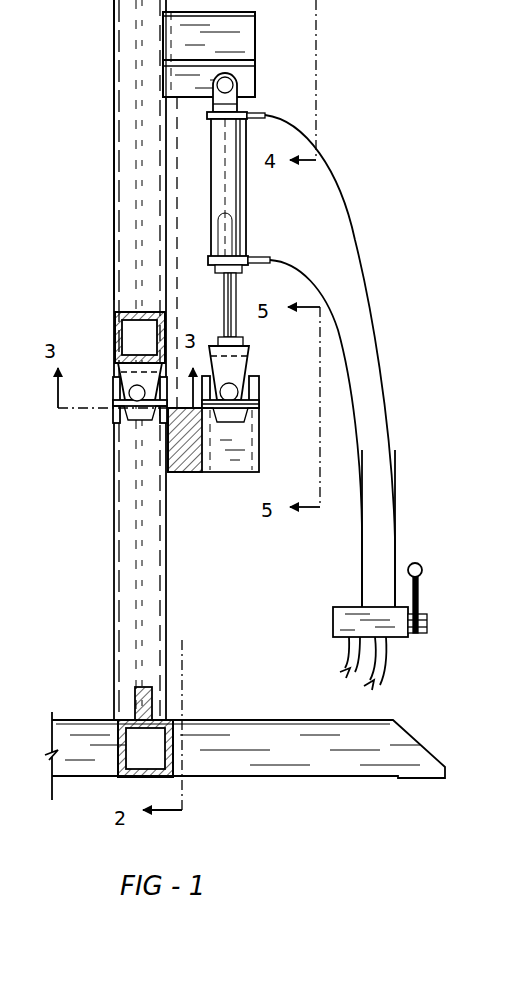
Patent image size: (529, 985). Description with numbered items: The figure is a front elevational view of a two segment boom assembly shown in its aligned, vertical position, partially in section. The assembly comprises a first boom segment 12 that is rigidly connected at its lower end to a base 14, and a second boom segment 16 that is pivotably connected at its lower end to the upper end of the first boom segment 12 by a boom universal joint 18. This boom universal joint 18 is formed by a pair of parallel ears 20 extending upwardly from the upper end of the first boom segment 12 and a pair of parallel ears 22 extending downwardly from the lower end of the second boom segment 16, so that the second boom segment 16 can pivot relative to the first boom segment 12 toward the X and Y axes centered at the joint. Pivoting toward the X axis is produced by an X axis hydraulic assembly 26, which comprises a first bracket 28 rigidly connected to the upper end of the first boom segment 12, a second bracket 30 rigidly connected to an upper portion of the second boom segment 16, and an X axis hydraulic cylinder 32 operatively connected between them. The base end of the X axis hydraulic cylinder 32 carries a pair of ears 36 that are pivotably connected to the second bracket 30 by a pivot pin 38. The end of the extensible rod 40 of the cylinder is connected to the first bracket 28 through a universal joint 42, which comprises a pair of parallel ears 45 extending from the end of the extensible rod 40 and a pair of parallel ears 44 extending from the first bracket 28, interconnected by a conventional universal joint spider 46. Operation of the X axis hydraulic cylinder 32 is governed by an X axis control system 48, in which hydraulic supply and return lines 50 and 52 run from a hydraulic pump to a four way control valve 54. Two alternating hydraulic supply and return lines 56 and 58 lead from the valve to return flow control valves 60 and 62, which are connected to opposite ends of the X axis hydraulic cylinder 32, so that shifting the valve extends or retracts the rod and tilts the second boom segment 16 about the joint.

The first boom segment 12 is at (116, 525).
The base 14 is at (88, 720).
The second boom segment 16 is at (113, 115).
The boom universal joint 18 is at (113, 397).
The parallel ears 20 is at (158, 405).
The parallel ears 22 is at (118, 372).
The X axis hydraulic assembly 26 is at (335, 80).
The first bracket 28 is at (185, 472).
The second bracket 30 is at (240, 30).
The X axis hydraulic cylinder 32 is at (210, 203).
The ears 36 is at (247, 112).
The pivot pin 38 is at (237, 82).
The extensible rod 40 is at (236, 287).
The universal joint 42 is at (330, 368).
The parallel ears 44 is at (249, 362).
The parallel ears 45 is at (250, 406).
The universal joint spider 46 is at (259, 394).
The X axis control system 48 is at (430, 580).
The hydraulic supply line 50 is at (352, 658).
The hydraulic return line 52 is at (382, 657).
The four way control valve 54 is at (333, 622).
The alternating hydraulic supply and return line 56 is at (361, 548).
The alternating hydraulic supply and return line 58 is at (395, 507).
The return flow control valve 60 is at (265, 118).
The return flow control valve 62 is at (264, 257).